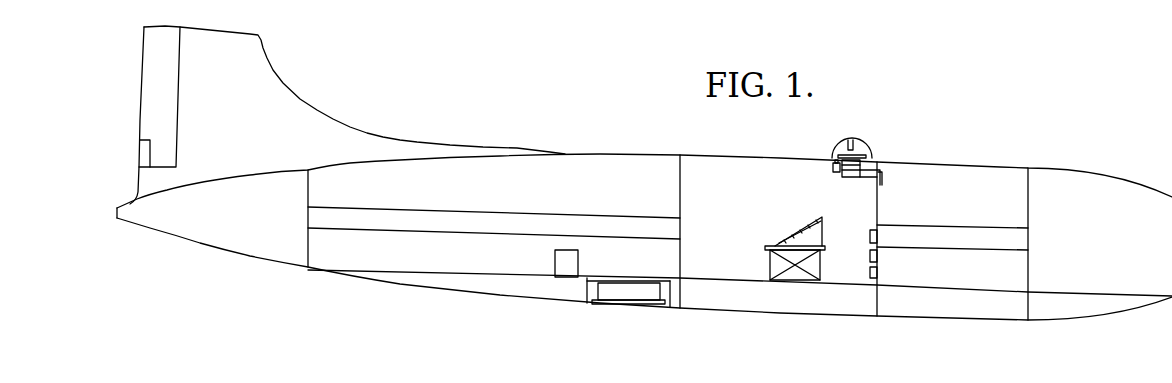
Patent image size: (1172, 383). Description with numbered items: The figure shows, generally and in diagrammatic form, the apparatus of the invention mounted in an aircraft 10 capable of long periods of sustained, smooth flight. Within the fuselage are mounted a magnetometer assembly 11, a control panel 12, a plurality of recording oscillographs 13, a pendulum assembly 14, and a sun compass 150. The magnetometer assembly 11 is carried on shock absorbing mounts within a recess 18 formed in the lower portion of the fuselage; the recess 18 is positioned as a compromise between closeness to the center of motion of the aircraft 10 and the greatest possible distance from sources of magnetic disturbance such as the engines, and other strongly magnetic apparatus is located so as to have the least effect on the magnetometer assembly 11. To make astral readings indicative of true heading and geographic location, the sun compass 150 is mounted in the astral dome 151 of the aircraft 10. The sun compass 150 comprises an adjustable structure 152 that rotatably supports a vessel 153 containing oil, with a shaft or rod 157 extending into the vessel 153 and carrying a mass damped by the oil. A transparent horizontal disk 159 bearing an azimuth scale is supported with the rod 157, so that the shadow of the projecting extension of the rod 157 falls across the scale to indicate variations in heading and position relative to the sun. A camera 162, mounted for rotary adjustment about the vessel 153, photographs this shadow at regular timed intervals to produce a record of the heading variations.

The aircraft 10 is at (897, 321).
The magnetometer assembly 11 is at (646, 279).
The control panel 12 is at (790, 237).
The recording oscillographs 13 is at (870, 272).
The pendulum assembly 14 is at (555, 265).
The recess 18 is at (589, 292).
The sun compass 150 is at (838, 184).
The astral dome 151 is at (870, 142).
The adjustable structure 152 is at (881, 172).
The vessel 153 is at (862, 180).
The rod 157 is at (850, 141).
The horizontal disk 159 is at (836, 154).
The camera 162 is at (832, 166).